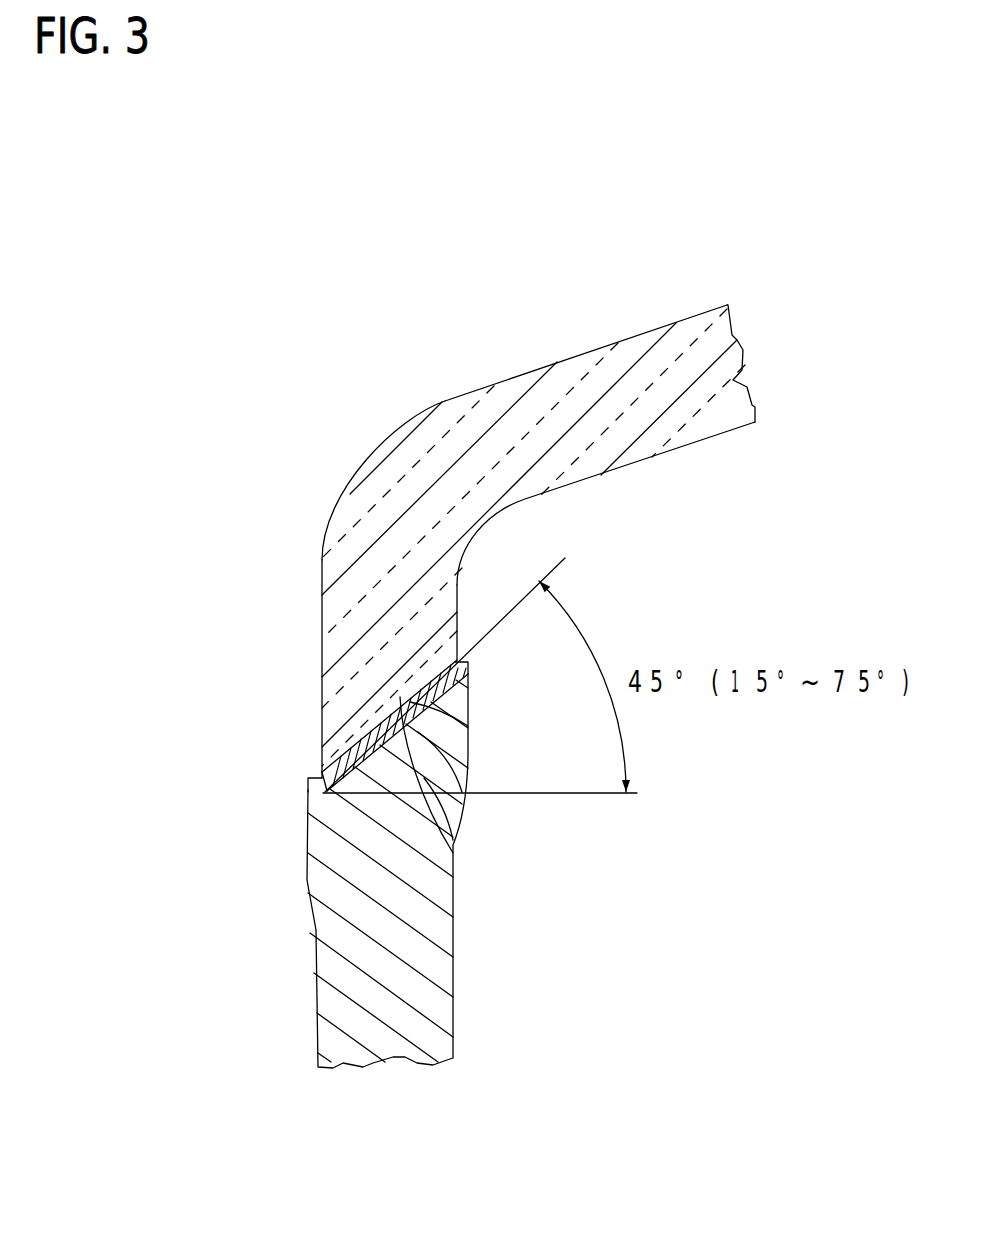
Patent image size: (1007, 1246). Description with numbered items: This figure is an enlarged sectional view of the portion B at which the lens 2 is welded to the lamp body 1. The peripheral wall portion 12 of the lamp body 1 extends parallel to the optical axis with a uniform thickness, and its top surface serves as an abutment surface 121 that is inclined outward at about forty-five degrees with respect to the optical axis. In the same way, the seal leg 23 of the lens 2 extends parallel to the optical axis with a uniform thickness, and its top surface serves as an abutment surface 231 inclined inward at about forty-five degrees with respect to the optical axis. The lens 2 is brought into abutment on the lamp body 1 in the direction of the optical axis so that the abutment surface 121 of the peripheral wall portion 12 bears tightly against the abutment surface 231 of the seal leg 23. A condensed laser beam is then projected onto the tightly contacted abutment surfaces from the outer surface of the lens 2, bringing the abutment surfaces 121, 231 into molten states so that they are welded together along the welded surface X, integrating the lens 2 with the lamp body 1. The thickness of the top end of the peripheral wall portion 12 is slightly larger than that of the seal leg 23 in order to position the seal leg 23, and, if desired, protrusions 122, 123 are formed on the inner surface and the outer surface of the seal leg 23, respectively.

The lamp body 1 is at (315, 1008).
The lens 2 is at (548, 388).
The peripheral wall portion 12 is at (434, 990).
The seal leg 23 is at (322, 625).
The abutment surface 121 is at (332, 738).
The protrusion 122 is at (470, 663).
The protrusion 123 is at (310, 786).
The abutment surface 231 is at (468, 757).
The portion B is at (314, 453).
The welded surface X is at (455, 862).